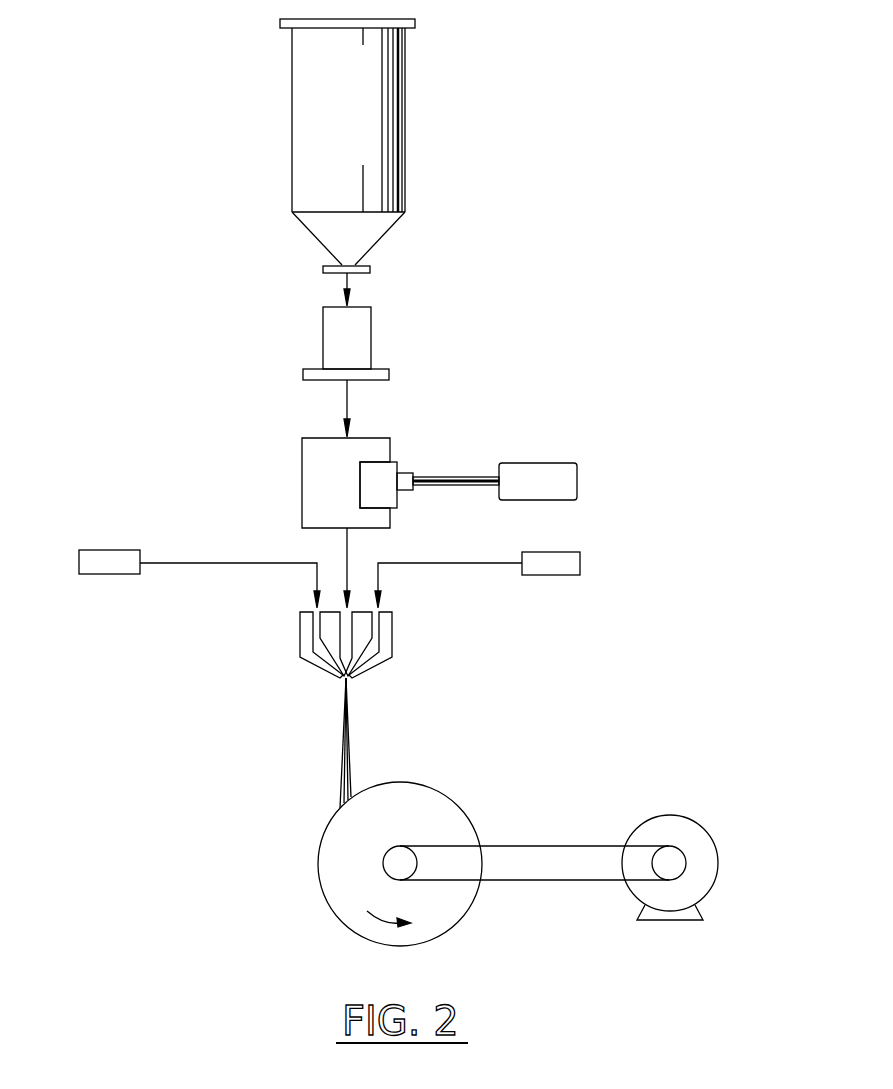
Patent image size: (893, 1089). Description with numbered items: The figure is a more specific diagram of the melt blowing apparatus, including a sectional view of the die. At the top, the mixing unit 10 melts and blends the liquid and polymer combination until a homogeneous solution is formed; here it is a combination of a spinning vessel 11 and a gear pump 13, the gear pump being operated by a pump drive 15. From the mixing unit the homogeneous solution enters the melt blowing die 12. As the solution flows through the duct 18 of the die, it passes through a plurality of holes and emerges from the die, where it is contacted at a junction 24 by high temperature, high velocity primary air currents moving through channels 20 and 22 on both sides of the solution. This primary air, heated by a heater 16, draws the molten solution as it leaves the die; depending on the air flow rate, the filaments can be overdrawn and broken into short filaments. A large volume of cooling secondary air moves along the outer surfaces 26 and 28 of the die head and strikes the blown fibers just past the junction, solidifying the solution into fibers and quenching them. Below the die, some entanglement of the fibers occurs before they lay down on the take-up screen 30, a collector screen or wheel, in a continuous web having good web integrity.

The mixing unit 10 is at (252, 22).
The spinning vessel 11 is at (300, 124).
The melt blowing die 12 is at (374, 710).
The gear pump 13 is at (308, 497).
The pump drive 15 is at (545, 472).
The heater 16 is at (120, 553).
The duct 18 is at (348, 565).
The channel 20 is at (227, 565).
The channel 22 is at (450, 563).
The junction 24 is at (340, 680).
The outer surface 26 is at (312, 658).
The outer surface 28 is at (385, 660).
The take-up screen 30 is at (447, 805).